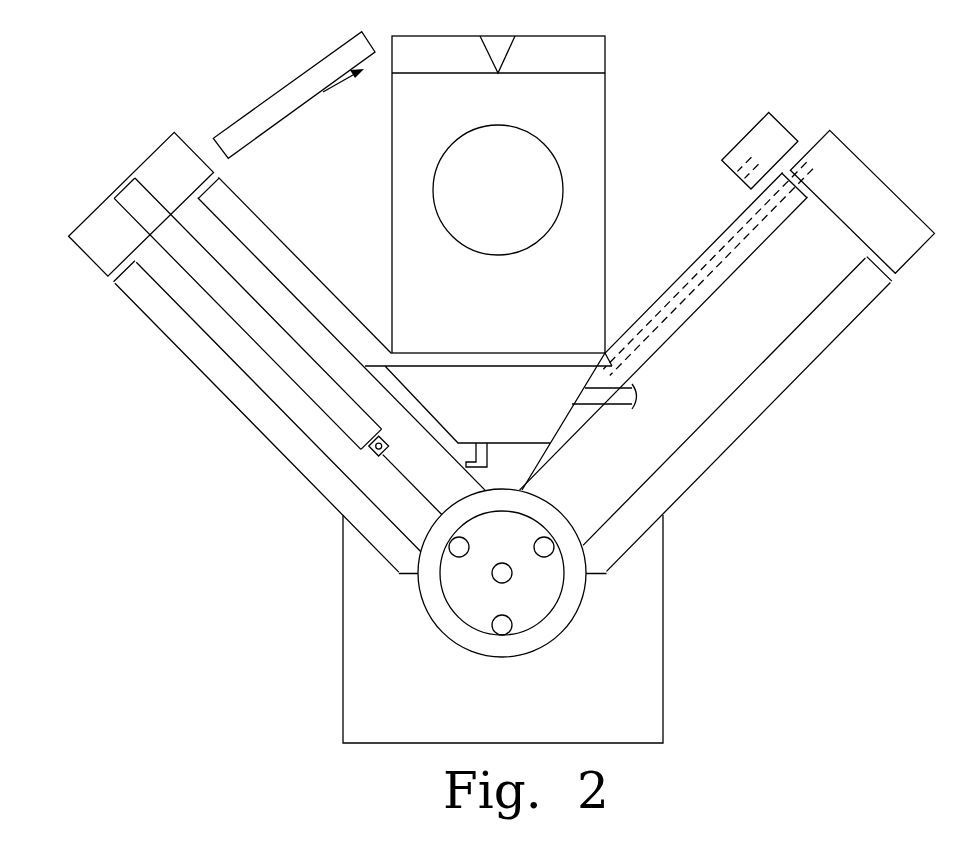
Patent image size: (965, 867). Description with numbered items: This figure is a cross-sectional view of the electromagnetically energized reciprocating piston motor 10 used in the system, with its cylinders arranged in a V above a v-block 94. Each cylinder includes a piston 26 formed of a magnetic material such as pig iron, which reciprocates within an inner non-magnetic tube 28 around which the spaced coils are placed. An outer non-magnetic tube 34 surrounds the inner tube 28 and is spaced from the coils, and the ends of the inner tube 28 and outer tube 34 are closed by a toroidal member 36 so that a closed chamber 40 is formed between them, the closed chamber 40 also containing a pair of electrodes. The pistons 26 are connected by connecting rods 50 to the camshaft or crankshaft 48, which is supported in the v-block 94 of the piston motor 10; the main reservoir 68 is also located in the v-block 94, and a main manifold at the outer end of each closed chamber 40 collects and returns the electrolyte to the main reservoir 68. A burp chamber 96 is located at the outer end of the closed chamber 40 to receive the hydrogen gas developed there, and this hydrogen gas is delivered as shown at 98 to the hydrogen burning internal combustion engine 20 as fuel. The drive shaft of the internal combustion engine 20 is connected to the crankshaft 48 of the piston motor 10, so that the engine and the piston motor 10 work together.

The reciprocating piston motor 10 is at (795, 497).
The hydrogen burning internal combustion engine 20 is at (605, 51).
The piston 26 is at (288, 362).
The inner non-magnetic tube 28 is at (291, 287).
The outer non-magnetic tube 34 is at (277, 231).
The toroidal member 36 is at (216, 186).
The closed chamber 40 is at (330, 300).
The crankshaft 48 is at (538, 602).
The connecting rod 50 is at (392, 472).
The main reservoir 68 is at (562, 412).
The v-block 94 is at (663, 676).
The burp chamber 96 is at (777, 133).
The hydrogen gas delivery 98 is at (321, 76).